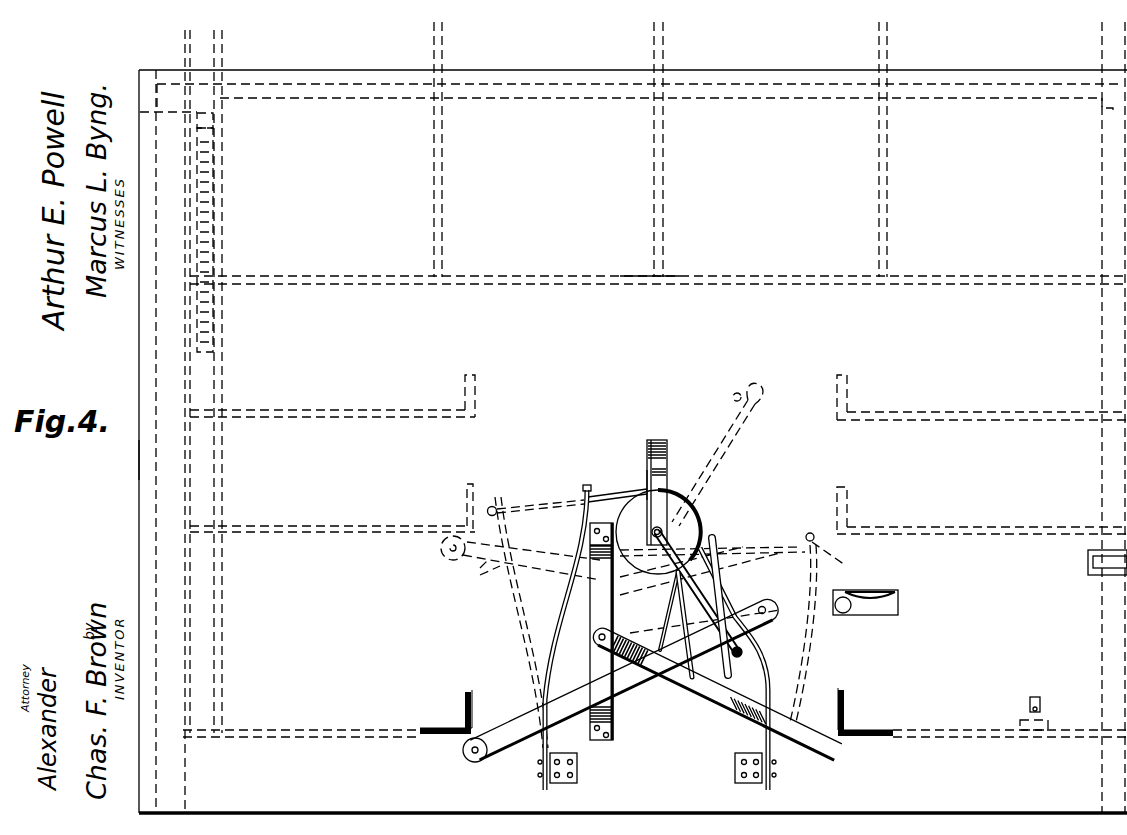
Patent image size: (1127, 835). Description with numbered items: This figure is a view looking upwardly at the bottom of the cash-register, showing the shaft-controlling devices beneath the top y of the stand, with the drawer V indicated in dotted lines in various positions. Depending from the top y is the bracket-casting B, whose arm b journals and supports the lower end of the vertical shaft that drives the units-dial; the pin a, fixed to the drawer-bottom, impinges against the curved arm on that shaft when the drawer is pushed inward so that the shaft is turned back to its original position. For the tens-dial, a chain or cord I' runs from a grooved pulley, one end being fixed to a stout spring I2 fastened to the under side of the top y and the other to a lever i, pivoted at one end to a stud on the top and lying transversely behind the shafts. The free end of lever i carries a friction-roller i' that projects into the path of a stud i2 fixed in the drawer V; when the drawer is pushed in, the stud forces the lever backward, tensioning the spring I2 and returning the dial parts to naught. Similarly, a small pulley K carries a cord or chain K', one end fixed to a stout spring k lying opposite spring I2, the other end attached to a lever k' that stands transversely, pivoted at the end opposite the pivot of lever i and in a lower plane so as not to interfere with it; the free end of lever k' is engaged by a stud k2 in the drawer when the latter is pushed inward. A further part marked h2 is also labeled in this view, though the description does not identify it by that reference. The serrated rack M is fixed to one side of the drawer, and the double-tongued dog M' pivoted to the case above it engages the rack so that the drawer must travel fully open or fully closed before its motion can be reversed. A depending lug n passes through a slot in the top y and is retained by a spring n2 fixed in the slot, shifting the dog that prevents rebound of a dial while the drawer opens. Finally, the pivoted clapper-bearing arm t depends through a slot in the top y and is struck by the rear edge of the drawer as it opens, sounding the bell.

The top of the stand or box y is at (139, 456).
The drawer V is at (651, 283).
The double-tongued dog M' is at (232, 126).
The serrated rack M is at (230, 240).
The stud i2 is at (447, 553).
The stud k2 is at (838, 392).
The stop block h2 is at (1100, 556).
The pin a is at (733, 396).
The lever i is at (559, 641).
The bracket-casting B is at (647, 447).
The arm of bracket-casting b is at (647, 482).
The spring k is at (637, 572).
The cord or chain K' is at (575, 626).
The pulley K is at (738, 653).
The spring I2 is at (716, 545).
The friction-roller i' is at (620, 668).
The lever k' is at (717, 694).
The chain or cord I' is at (629, 638).
The depending lug n is at (838, 612).
The spring n2 is at (856, 597).
The clapper-bearing arm t is at (1031, 705).